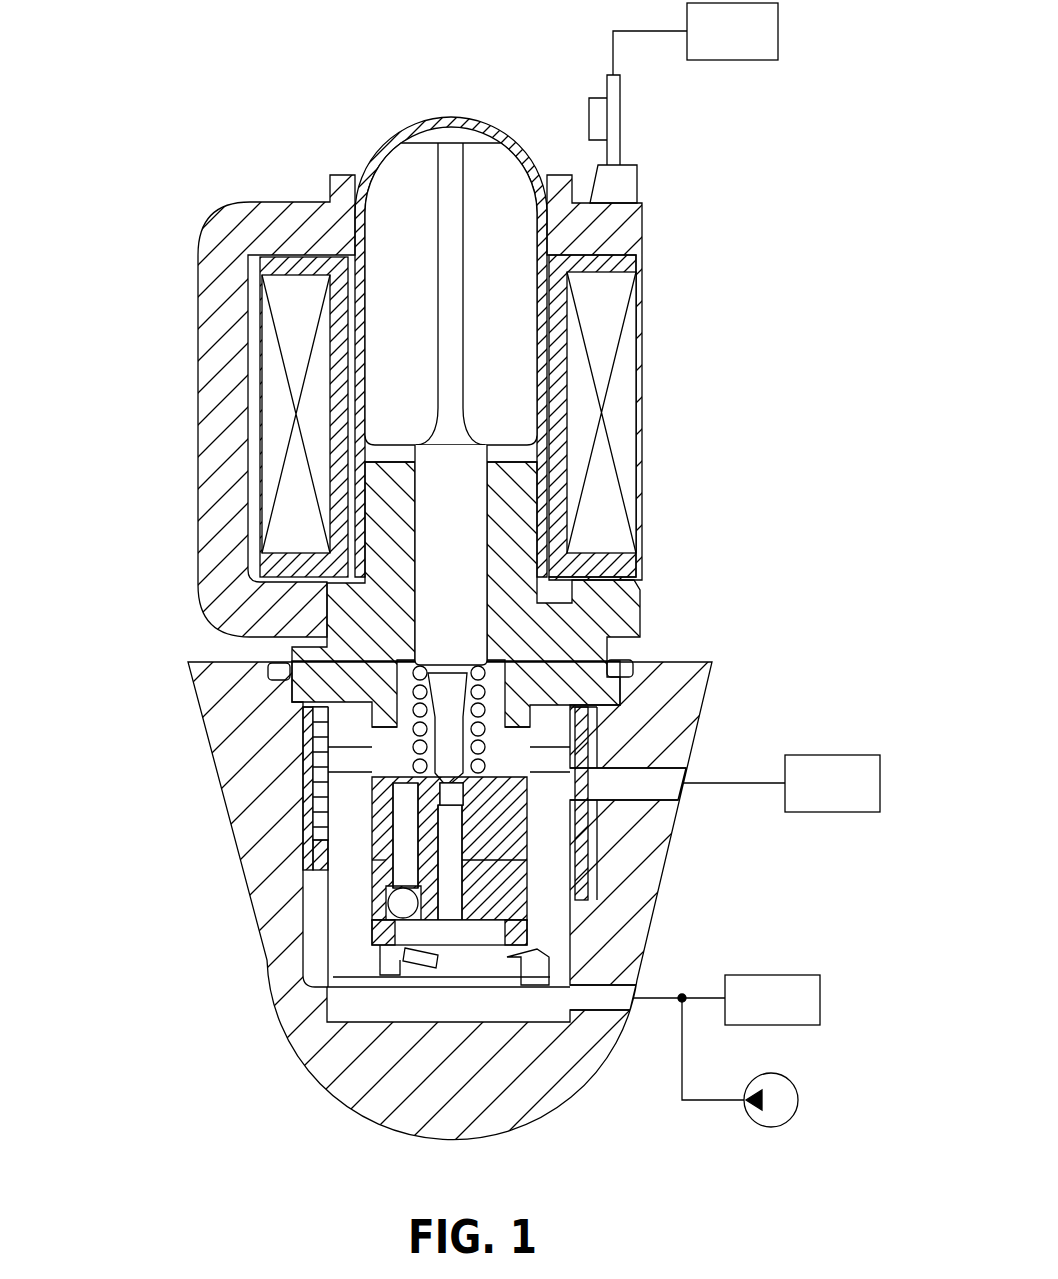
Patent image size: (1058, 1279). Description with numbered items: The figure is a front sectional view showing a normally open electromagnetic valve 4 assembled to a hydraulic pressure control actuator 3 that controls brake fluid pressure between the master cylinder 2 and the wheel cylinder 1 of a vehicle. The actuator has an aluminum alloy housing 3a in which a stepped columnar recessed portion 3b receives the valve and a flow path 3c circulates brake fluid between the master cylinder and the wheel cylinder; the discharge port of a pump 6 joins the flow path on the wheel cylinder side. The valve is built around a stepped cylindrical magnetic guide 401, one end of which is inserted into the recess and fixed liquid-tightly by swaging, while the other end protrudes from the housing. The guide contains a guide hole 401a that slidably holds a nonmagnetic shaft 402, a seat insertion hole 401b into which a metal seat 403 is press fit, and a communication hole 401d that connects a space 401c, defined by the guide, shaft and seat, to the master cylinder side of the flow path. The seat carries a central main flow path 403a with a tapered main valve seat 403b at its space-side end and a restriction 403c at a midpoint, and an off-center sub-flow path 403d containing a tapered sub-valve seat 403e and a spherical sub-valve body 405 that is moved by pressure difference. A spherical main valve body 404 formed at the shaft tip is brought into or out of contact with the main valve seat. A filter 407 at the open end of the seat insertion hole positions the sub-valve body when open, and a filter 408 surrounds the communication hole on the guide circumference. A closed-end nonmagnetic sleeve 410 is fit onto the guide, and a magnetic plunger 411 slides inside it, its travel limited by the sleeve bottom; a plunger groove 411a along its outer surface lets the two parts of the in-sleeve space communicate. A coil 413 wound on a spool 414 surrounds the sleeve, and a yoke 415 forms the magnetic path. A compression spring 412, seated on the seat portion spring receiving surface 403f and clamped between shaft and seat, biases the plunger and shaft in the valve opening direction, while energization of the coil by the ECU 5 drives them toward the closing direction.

The wheel cylinder 1 is at (822, 998).
The master cylinder 2 is at (845, 755).
The hydraulic pressure control actuator 3 is at (130, 598).
The housing 3a is at (345, 1052).
The recessed portion 3b is at (305, 740).
The flow path 3c is at (622, 790).
The electromagnetic valve 4 is at (180, 392).
The ECU 5 is at (780, 30).
The pump 6 is at (798, 1100).
The guide 401 is at (560, 660).
The guide hole 401a is at (490, 498).
The seat insertion hole 401b is at (450, 902).
The space 401c is at (500, 740).
The communication hole 401d is at (588, 765).
The shaft 402 is at (452, 538).
The seat 403 is at (478, 913).
The main flow path 403a is at (505, 935).
The main valve seat 403b is at (455, 798).
The restriction 403c is at (520, 862).
The sub-flow path 403d is at (403, 800).
The sub-valve seat 403e is at (368, 890).
The seat portion spring receiving surface 403f is at (560, 757).
The main valve body 404 is at (440, 768).
The sub-valve body 405 is at (400, 905).
The filter 407 is at (430, 962).
The filter 408 is at (318, 822).
The sleeve 410 is at (507, 127).
The plunger 411 is at (495, 300).
The plunger groove 411a is at (450, 225).
The spring 412 is at (282, 672).
The coil 413 is at (290, 300).
The spool 414 is at (300, 262).
The yoke 415 is at (222, 345).